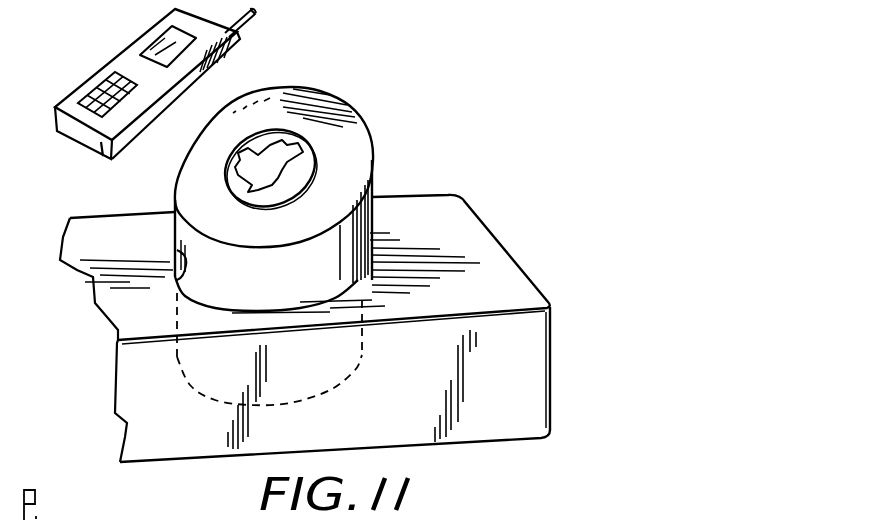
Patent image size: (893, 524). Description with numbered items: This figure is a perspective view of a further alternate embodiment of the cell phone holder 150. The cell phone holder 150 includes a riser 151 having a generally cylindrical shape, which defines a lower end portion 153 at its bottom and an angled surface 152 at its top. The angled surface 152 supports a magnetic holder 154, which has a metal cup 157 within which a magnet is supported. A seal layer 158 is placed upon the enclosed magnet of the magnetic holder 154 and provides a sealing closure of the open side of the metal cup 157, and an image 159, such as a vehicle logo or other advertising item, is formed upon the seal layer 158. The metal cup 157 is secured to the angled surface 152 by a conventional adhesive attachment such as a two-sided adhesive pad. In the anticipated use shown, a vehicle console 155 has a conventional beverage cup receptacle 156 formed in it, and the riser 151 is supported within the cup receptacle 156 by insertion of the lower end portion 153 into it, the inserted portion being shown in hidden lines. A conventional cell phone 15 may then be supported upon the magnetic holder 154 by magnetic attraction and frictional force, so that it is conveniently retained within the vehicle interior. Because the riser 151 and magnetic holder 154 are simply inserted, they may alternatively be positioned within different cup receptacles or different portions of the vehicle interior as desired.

The cell phone 15 is at (107, 63).
The cell phone holder 150 is at (304, 170).
The riser 151 is at (372, 187).
The angled surface 152 is at (323, 103).
The lower end portion 153 is at (360, 353).
The magnetic holder 154 is at (366, 196).
The vehicle console 155 is at (88, 218).
The beverage cup receptacle 156 is at (177, 248).
The metal cup 157 is at (277, 213).
The seal layer 158 is at (267, 132).
The image 159 is at (312, 144).